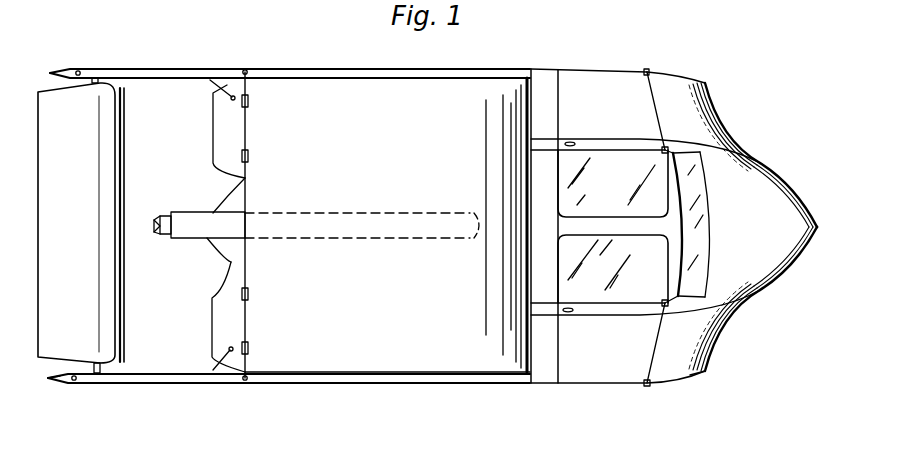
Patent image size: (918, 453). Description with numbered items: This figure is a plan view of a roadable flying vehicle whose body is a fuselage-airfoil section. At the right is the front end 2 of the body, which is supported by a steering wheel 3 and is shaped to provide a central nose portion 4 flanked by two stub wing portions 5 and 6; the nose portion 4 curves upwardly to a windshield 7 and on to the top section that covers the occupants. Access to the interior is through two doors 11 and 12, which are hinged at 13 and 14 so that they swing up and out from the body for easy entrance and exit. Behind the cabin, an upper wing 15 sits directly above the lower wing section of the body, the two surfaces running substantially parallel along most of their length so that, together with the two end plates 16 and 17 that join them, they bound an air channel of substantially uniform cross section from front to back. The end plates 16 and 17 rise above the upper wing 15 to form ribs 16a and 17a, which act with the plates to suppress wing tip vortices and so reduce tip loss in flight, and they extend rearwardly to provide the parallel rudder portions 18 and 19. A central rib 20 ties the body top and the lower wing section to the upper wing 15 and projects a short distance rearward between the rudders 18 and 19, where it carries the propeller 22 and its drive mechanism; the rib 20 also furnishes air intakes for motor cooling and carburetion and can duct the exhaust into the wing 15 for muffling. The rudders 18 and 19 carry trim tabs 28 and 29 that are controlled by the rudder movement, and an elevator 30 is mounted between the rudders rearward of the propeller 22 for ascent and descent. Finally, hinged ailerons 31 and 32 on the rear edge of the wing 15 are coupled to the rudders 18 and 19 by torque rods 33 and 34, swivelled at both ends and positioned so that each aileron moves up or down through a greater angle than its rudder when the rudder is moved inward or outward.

The front end 2 is at (776, 156).
The steering wheel 3 is at (663, 300).
The central nose portion 4 is at (805, 252).
The stub wing portion 5 is at (681, 82).
The stub wing portion 6 is at (695, 375).
The windshield 7 is at (703, 194).
The door 11 is at (592, 378).
The door 12 is at (598, 78).
The hinge 13 is at (663, 153).
The hinge 14 is at (647, 72).
The upper wing 15 is at (352, 322).
The end plate 16 is at (464, 67).
The rib 16a is at (312, 73).
The end plate 17 is at (449, 388).
The rib 17a is at (322, 380).
The rudder portion 18 is at (192, 70).
The rudder portion 19 is at (155, 384).
The central rib 20 is at (207, 238).
The propeller 22 is at (158, 211).
The trim tab 28 is at (68, 69).
The trim tab 29 is at (54, 384).
The elevator 30 is at (78, 180).
The aileron 31 is at (217, 120).
The aileron 32 is at (212, 304).
The torque rod 33 is at (208, 83).
The torque rod 34 is at (213, 364).